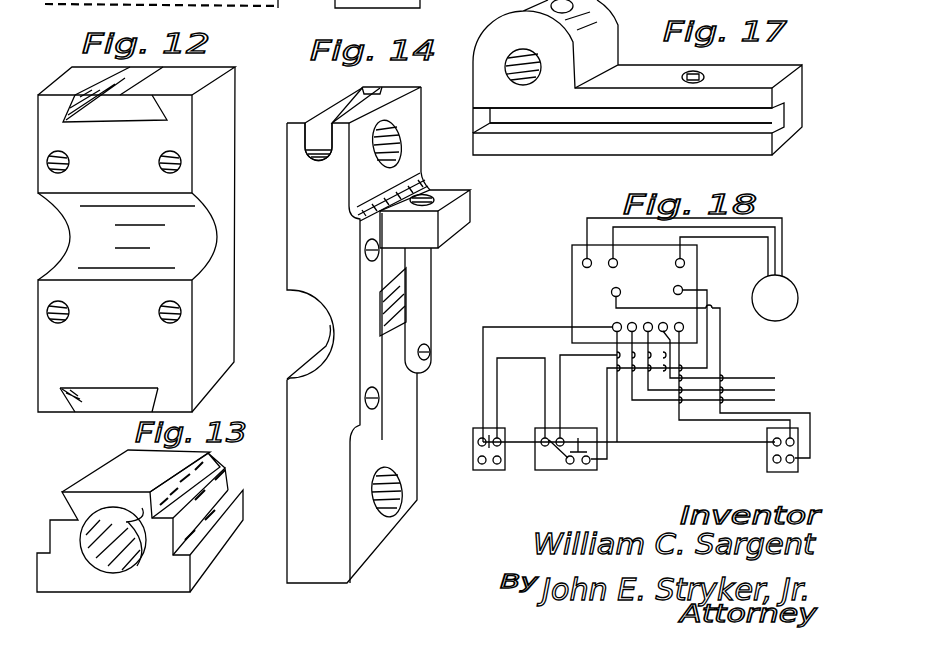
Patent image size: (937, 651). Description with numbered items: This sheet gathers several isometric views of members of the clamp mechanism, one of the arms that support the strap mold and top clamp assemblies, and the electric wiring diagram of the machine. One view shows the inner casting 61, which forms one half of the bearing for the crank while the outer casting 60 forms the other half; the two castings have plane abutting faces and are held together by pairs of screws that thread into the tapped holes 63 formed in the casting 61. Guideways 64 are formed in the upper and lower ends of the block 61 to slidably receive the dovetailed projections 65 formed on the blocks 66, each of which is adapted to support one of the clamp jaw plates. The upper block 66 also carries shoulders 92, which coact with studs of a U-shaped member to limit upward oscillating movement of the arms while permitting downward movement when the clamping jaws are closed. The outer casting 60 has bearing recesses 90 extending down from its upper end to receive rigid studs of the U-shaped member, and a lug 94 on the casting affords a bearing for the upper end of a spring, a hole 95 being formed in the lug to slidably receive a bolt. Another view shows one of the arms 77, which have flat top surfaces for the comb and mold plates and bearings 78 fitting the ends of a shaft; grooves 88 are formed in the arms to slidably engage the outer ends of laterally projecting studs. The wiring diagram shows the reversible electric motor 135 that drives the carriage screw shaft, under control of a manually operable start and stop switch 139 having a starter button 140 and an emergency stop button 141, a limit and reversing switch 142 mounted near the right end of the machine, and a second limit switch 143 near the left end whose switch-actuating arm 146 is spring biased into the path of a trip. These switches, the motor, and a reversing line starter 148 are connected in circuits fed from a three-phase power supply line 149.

In FIG. 14, the outer casting 60 is at (410, 413).
In FIG. 12, the inner casting 61 is at (222, 316).
In FIG. 12, the tapped holes 63 is at (159, 162).
In FIG. 12, the guideways 64 is at (146, 90).
In FIG. 13, the dovetailed projections 65 is at (115, 471).
In FIG. 13, the blocks 66 is at (150, 582).
In FIG. 17, the arms 77 is at (781, 136).
In FIG. 17, the bearings 78 is at (520, 62).
In FIG. 17, the grooves 88 is at (642, 125).
In FIG. 14, the bearing recesses 90 is at (381, 90).
In FIG. 13, the shoulders 92 is at (42, 553).
In FIG. 14, the lug 94 is at (462, 210).
In FIG. 14, the hole 95 is at (430, 194).
In FIG. 18, the electric motor 135 is at (790, 314).
In FIG. 18, the start and stop switch 139 is at (543, 473).
In FIG. 18, the starter button 140 is at (578, 438).
In FIG. 18, the emergency stop button 141 is at (548, 446).
In FIG. 18, the limit and reversing switch 142 is at (767, 466).
In FIG. 18, the limit switch 143 is at (490, 470).
In FIG. 18, the switch-actuating arm 146 is at (477, 445).
In FIG. 18, the reversing line starter 148 is at (583, 290).
In FIG. 18, the three-phase power supply line 149 is at (745, 388).